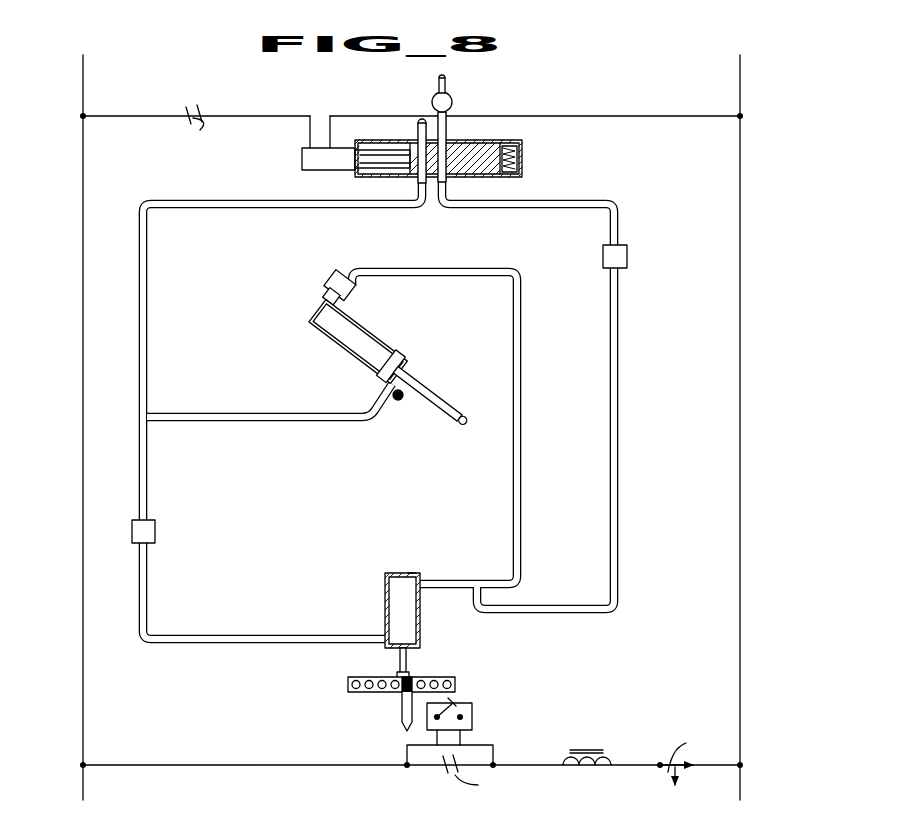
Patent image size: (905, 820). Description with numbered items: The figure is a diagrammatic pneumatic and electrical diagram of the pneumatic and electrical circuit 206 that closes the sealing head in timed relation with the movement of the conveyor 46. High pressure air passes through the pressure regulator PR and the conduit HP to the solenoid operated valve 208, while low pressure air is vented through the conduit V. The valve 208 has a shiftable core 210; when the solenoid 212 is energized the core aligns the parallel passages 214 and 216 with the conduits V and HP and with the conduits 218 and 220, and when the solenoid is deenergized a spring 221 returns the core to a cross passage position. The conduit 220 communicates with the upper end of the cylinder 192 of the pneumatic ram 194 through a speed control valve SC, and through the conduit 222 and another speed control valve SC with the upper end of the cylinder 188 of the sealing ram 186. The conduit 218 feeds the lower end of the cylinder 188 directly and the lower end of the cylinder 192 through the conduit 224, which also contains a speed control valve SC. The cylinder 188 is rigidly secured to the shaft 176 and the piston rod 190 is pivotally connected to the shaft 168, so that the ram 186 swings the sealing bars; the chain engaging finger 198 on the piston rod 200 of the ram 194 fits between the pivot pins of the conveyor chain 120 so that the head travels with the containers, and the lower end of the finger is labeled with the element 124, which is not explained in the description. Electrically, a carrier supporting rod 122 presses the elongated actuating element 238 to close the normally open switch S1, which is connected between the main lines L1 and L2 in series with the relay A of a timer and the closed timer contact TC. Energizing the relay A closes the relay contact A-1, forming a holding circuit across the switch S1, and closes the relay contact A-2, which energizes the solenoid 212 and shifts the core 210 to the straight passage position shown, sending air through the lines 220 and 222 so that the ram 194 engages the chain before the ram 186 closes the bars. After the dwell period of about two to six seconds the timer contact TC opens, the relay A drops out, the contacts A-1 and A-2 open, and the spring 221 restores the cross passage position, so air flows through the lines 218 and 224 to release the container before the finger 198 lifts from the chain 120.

The pneumatic and electrical circuit 206 is at (425, 130).
The solenoid operated valve 208 is at (523, 176).
The shiftable core 210 is at (522, 141).
The solenoid 212 is at (302, 158).
The parallel passage 214 is at (418, 166).
The parallel passage 216 is at (450, 172).
The conduit 218 is at (330, 206).
The conduit 220 is at (560, 206).
The spring 221 is at (520, 158).
The conduit 222 is at (521, 413).
The conduit 224 is at (150, 645).
The pneumatic ram 186 is at (364, 361).
The cylinder 188 is at (358, 341).
The piston rod 190 is at (427, 394).
The shaft 176 is at (398, 401).
The shaft 168 is at (462, 420).
The cylinder 192 is at (386, 599).
The pneumatic ram 194 is at (415, 570).
The piston rod 200 is at (396, 659).
The chain engaging finger 198 is at (398, 690).
The conveyor 46 is at (346, 684).
The carrier supporting rod 122 is at (412, 686).
The conveyor chain 120 is at (456, 682).
The plunger tip 124 is at (404, 729).
The elongated actuating element 238 is at (456, 700).
The switch S1 is at (473, 718).
The speed control valve SC is at (628, 259).
The pressure regulator PR is at (449, 103).
The conduit HP is at (447, 131).
The conduit V is at (417, 128).
The relay A is at (615, 757).
The timer contact TC is at (685, 756).
The relay contact A-1 is at (481, 777).
The relay contact A-2 is at (177, 122).
The main line L1 is at (83, 364).
The main line L2 is at (740, 386).